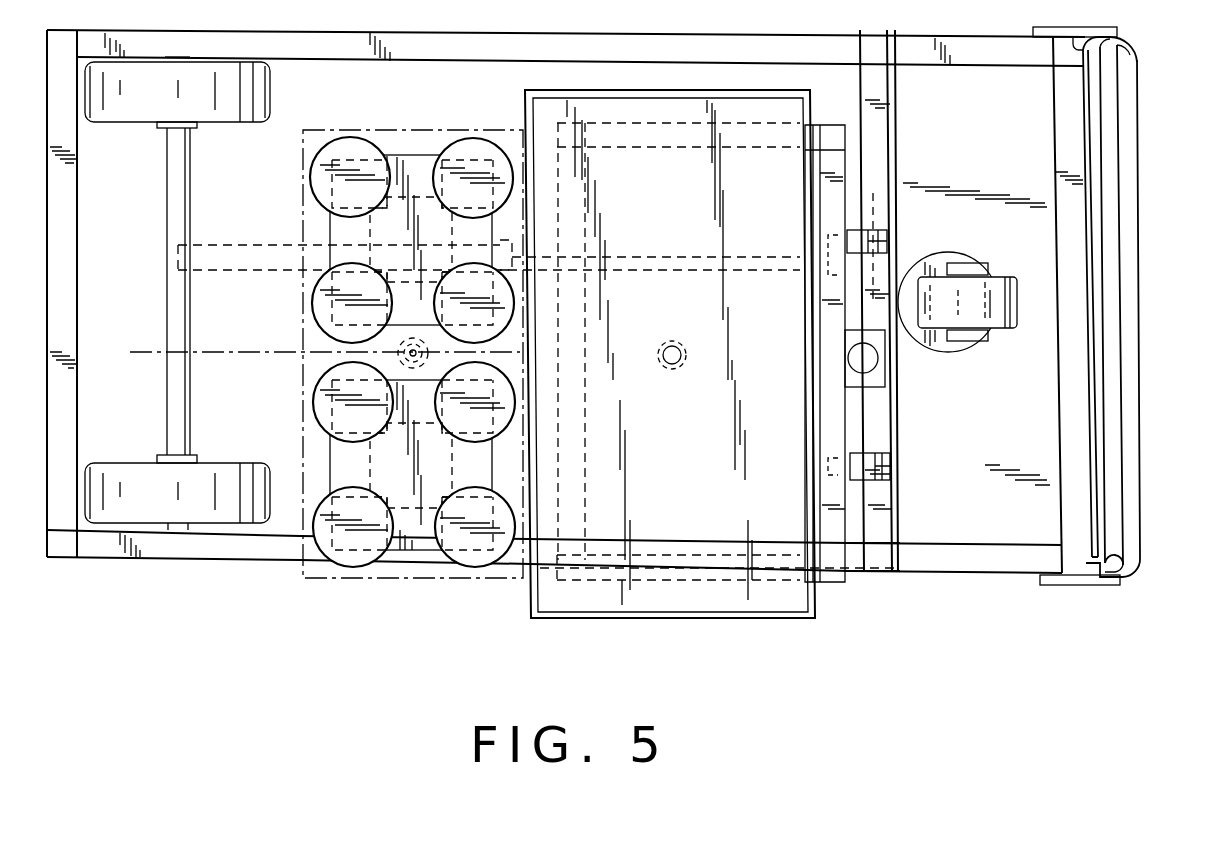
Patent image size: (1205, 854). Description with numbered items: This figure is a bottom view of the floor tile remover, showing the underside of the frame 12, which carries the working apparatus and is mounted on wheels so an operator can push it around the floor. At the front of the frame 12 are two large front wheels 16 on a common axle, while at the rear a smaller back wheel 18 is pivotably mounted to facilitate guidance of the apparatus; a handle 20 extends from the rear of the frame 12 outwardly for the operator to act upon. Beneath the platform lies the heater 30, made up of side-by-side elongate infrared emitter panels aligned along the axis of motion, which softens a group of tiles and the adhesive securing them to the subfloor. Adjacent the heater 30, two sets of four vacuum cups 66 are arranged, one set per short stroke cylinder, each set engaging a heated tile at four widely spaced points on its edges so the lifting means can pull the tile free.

The frame 12 is at (228, 255).
The front wheels 16 is at (138, 462).
The back wheel 18 is at (1002, 330).
The handle 20 is at (1140, 293).
The heater 30 is at (797, 600).
The vacuum cups 66 is at (356, 147).